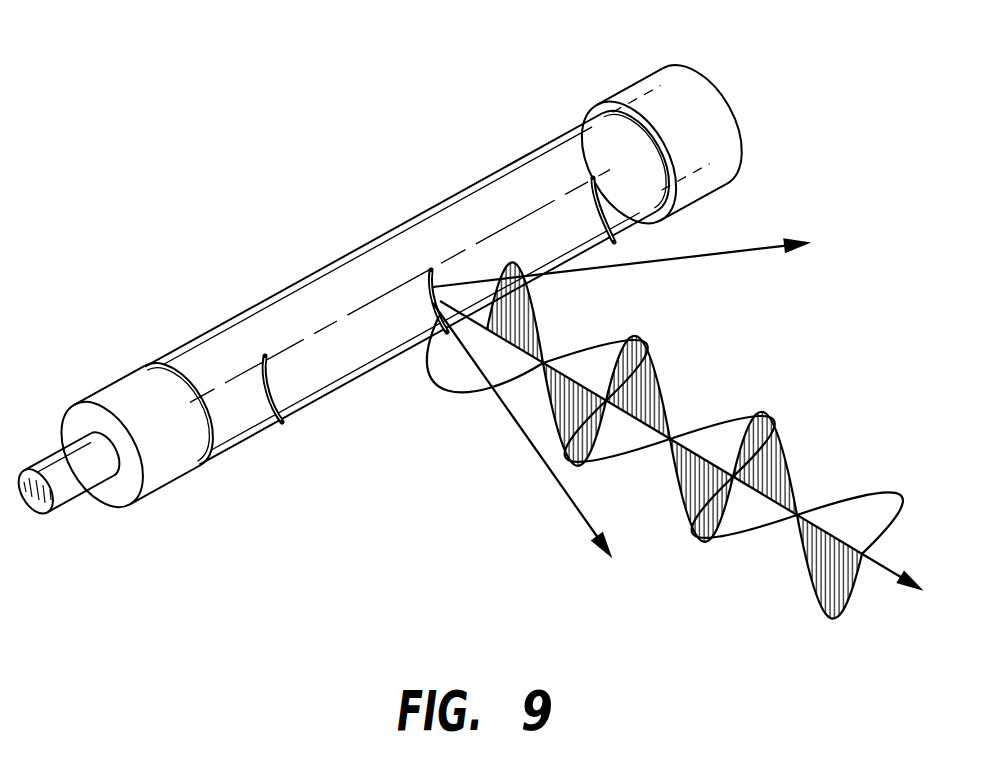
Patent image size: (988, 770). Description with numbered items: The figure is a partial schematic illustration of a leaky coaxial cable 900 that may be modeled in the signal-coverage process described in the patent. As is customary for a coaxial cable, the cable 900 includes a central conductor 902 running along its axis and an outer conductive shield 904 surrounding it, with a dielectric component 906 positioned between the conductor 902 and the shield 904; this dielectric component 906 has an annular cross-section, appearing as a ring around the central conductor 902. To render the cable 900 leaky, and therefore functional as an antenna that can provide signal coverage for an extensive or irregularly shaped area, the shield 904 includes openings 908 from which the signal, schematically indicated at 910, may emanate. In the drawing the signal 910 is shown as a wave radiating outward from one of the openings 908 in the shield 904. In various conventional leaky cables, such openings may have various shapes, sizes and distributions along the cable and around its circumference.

The leaky coaxial cable 900 is at (377, 295).
The central conductor 902 is at (68, 505).
The outer conductive shield 904 is at (257, 441).
The dielectric component 906 is at (156, 490).
The openings 908 is at (268, 355).
The signal 910 is at (793, 320).